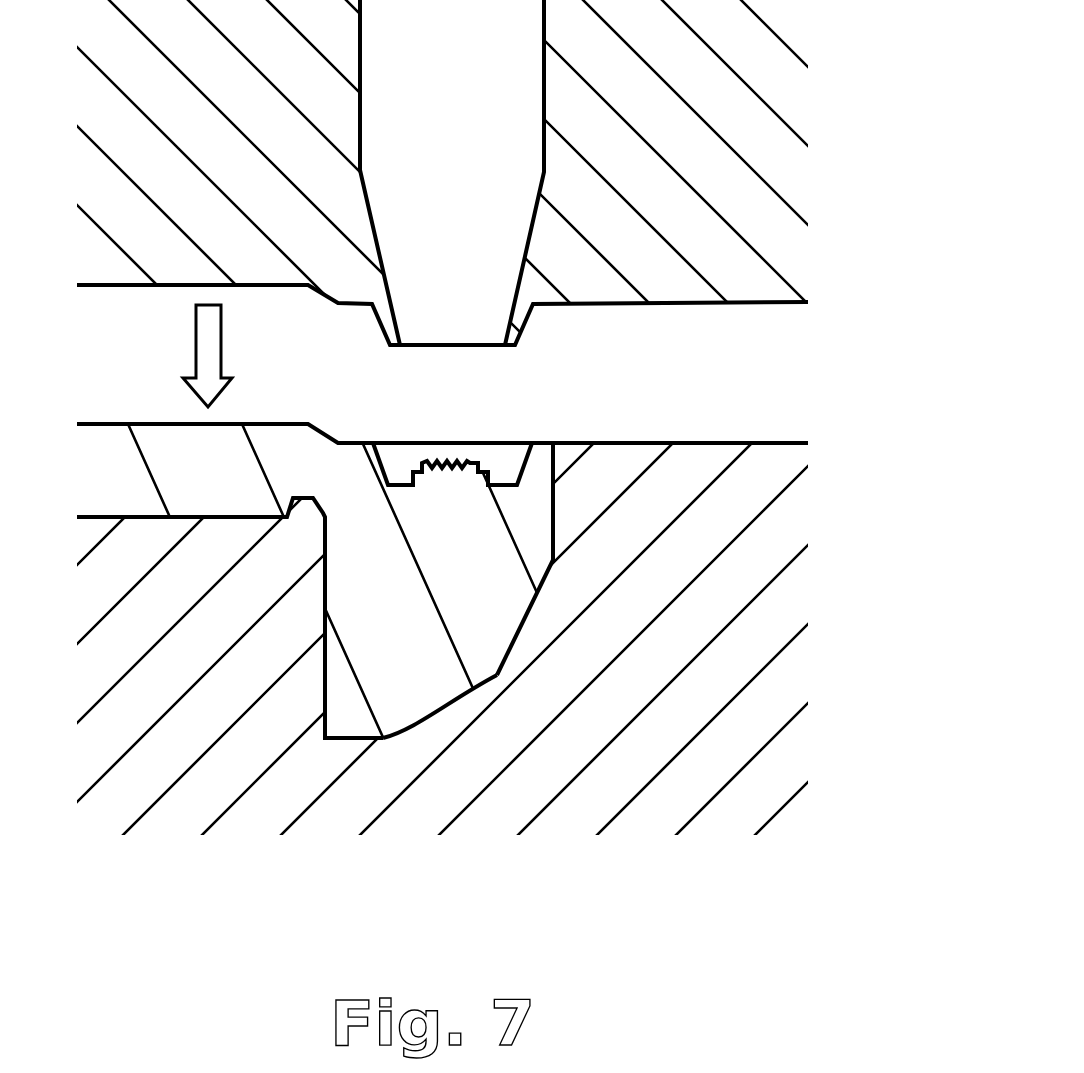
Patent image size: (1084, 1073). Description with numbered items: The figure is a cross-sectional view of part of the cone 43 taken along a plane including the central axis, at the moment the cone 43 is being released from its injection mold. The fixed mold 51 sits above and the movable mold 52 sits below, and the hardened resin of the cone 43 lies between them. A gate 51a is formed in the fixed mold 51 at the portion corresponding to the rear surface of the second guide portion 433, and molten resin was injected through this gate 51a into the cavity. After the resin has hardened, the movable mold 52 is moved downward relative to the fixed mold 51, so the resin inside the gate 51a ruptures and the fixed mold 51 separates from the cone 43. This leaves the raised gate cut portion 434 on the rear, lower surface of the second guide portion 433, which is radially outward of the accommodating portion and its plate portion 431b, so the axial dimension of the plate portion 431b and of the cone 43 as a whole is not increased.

The fixed mold 51 is at (758, 223).
The gate 51a is at (455, 303).
The movable mold 52 is at (758, 628).
The cone 43 is at (273, 388).
The plate portion 431b is at (126, 447).
The gate cut portion 434 is at (460, 485).
The second guide portion 433 is at (412, 700).